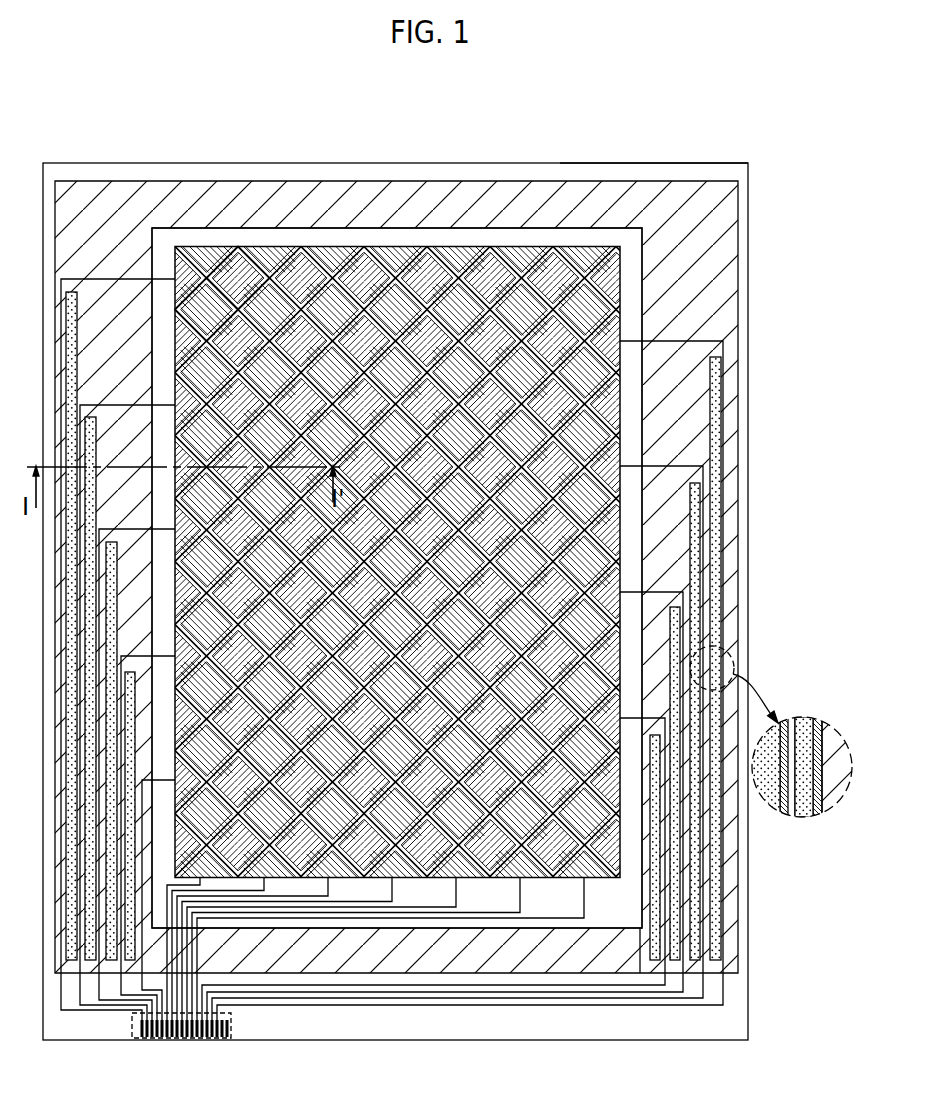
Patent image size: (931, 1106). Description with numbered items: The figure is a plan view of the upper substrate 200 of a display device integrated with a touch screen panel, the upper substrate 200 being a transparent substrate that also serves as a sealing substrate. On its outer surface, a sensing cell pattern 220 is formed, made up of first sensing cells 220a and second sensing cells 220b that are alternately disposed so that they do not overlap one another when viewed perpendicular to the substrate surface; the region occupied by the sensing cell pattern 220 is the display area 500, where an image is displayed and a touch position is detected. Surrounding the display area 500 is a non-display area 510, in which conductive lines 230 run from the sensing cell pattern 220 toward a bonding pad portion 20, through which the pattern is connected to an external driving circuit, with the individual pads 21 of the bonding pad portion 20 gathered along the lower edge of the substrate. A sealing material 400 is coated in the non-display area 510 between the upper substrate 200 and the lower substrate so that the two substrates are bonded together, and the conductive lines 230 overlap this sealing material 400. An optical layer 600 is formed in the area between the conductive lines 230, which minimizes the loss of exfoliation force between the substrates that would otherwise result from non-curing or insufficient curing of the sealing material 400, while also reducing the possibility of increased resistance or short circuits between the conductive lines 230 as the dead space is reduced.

The upper substrate 200 is at (515, 163).
The non-display area 510 is at (705, 170).
The display area 500 is at (628, 268).
The sealing material 400 is at (738, 498).
The sensing cell pattern 220 is at (290, 121).
The first sensing cells 220a is at (242, 270).
The second sensing cells 220b is at (205, 298).
The conductive lines 230 is at (70, 290).
The optical layer 600 is at (102, 279).
The bonding pad portion 20 is at (231, 1030).
The connection pad 21 is at (140, 1026).